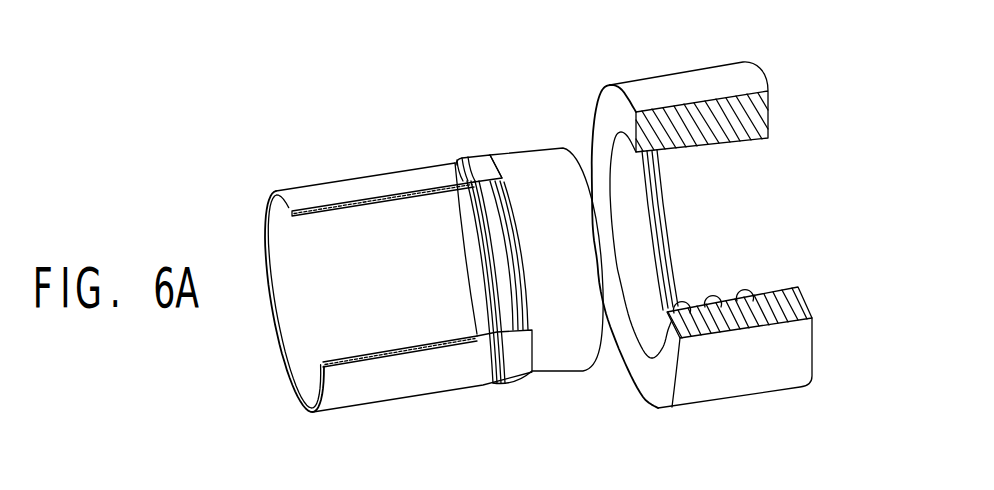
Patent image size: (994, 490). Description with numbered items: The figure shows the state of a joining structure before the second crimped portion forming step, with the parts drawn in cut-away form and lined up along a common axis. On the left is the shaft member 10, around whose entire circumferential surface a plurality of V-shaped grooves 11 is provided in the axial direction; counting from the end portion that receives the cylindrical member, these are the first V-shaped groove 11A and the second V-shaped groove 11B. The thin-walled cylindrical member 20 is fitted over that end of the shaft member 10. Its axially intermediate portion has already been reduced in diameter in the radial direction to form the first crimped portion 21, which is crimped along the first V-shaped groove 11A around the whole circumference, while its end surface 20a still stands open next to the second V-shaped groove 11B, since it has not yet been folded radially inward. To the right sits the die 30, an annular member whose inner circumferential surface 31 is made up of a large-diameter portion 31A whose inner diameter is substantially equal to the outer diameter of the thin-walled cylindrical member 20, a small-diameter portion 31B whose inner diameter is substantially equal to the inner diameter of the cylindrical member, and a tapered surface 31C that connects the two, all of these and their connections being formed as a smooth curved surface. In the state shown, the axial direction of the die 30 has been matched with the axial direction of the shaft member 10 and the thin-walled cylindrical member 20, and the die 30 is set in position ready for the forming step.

The shaft member 10 is at (536, 158).
The V-shaped grooves 11 is at (512, 323).
The first V-shaped groove 11A is at (488, 262).
The second V-shaped groove 11B is at (518, 247).
The thin-walled cylindrical member 20 is at (343, 190).
The end surface 20a is at (503, 158).
The first crimped portion 21 is at (449, 160).
The die 30 is at (714, 245).
The inner circumferential surface 31 is at (739, 319).
The large-diameter portion 31A is at (682, 312).
The small-diameter portion 31B is at (747, 299).
The tapered surface 31C is at (714, 305).